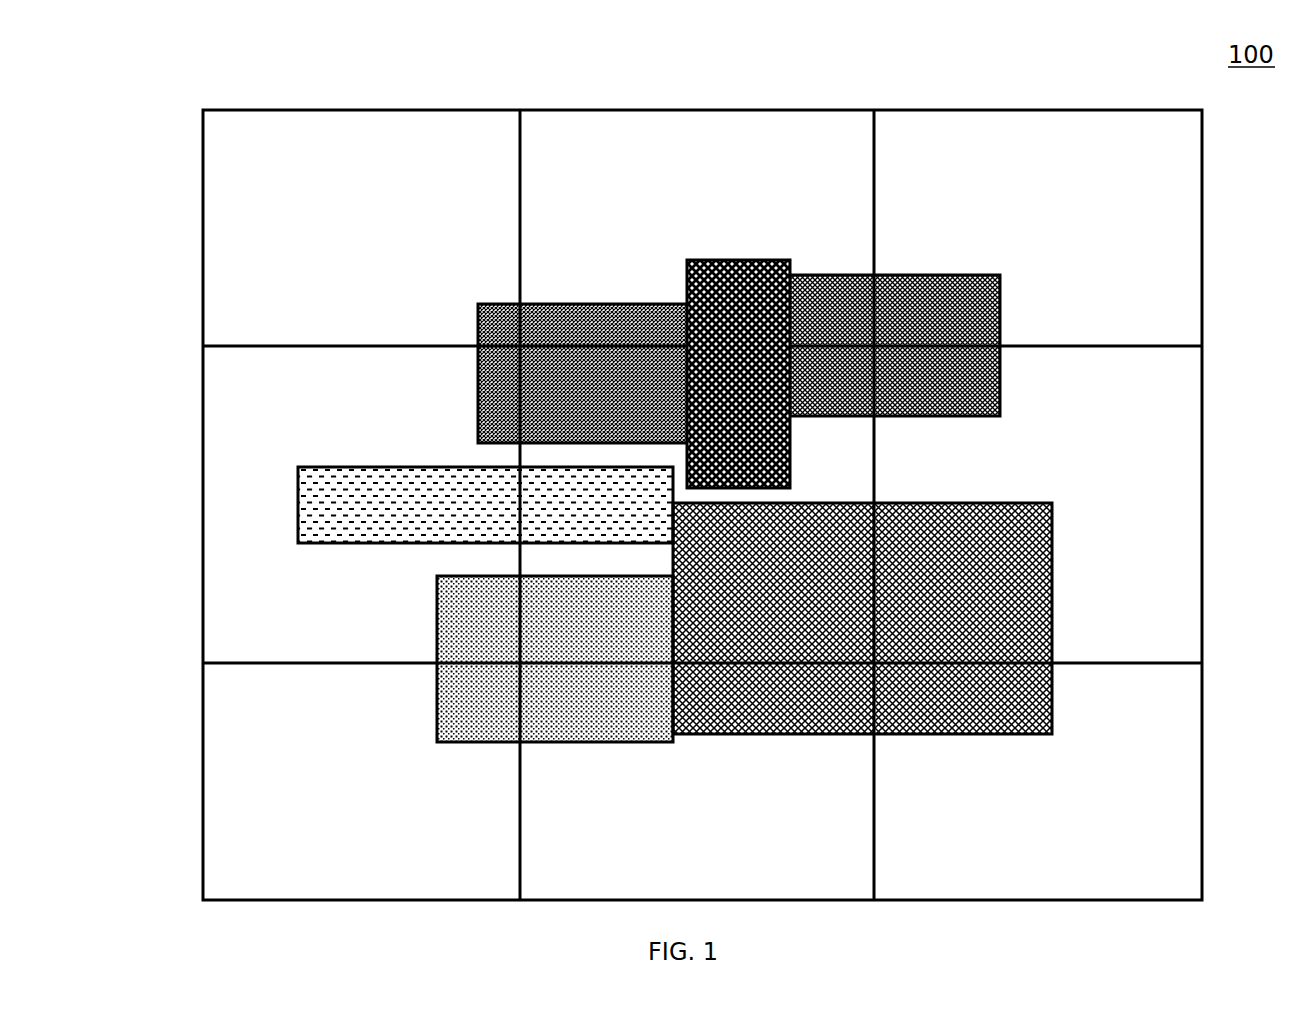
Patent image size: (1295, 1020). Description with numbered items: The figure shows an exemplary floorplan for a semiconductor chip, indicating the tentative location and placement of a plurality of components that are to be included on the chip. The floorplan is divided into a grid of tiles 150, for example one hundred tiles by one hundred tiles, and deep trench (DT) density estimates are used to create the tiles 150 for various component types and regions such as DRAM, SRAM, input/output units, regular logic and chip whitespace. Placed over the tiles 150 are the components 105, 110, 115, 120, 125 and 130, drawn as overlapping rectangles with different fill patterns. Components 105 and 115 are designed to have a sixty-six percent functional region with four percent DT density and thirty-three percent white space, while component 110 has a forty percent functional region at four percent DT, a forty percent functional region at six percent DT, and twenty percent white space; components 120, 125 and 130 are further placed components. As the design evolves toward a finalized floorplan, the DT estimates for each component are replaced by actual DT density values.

The tiles 150 is at (203, 143).
The component 105 is at (478, 312).
The component 110 is at (687, 272).
The component 115 is at (1000, 302).
The component 120 is at (300, 467).
The component 125 is at (437, 628).
The component 130 is at (1052, 520).